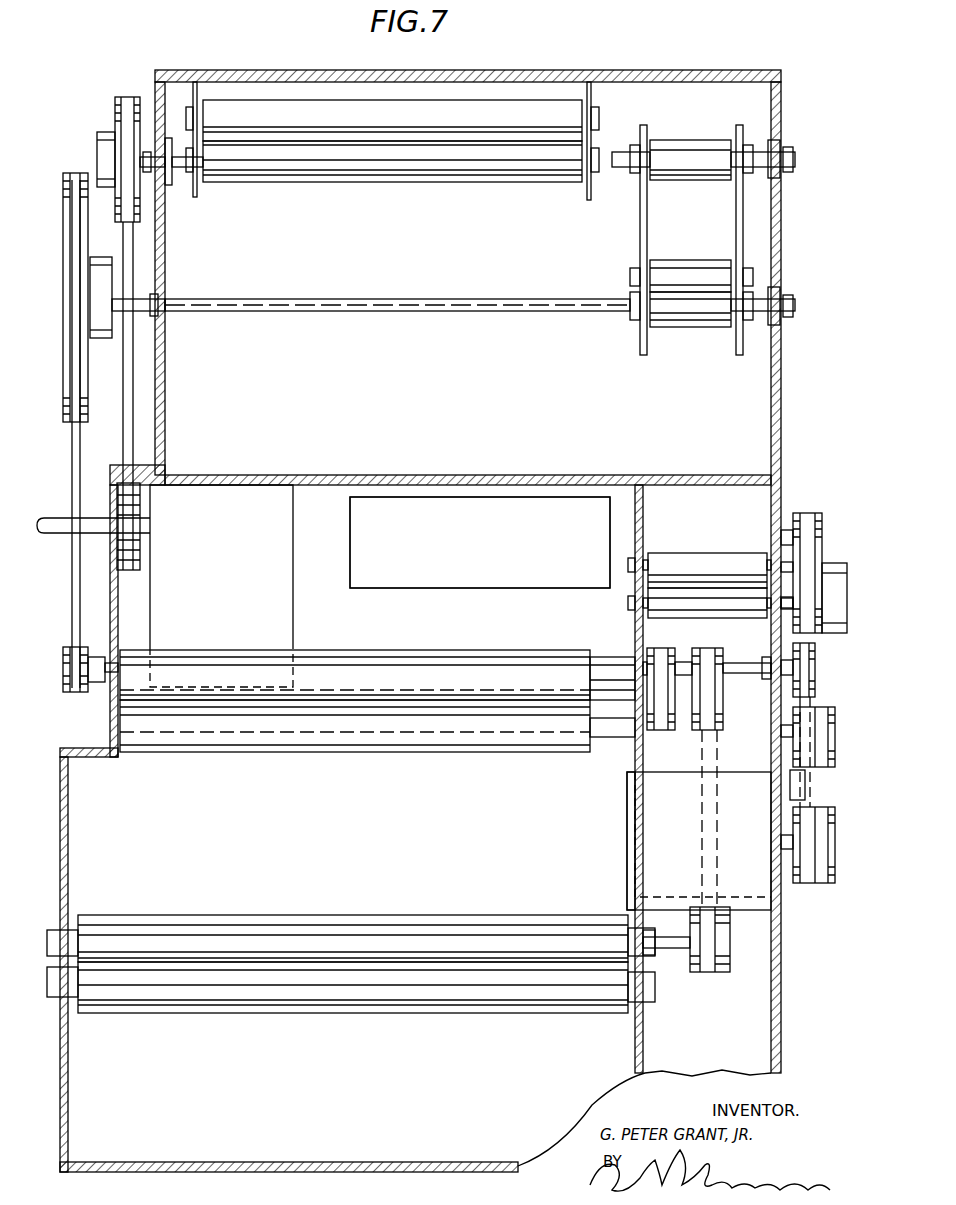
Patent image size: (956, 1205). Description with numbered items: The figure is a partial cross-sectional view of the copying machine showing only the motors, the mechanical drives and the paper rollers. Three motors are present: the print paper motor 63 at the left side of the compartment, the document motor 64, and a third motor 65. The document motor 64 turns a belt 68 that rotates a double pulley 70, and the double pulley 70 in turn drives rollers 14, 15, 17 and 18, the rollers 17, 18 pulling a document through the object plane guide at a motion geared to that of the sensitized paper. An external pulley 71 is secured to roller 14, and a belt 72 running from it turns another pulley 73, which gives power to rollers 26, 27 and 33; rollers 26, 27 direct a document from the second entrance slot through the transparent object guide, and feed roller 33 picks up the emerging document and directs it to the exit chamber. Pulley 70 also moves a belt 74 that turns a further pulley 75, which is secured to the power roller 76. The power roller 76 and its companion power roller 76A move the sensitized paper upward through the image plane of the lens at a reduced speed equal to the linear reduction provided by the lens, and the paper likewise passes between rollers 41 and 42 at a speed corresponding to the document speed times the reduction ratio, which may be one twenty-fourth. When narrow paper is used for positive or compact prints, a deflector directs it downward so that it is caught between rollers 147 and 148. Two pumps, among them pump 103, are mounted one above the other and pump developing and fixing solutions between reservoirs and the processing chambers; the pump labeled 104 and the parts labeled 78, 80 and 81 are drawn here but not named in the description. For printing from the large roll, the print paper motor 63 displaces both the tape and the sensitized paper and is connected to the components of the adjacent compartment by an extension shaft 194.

The roller 14 is at (408, 680).
The roller 15 is at (335, 748).
The roller 17 is at (410, 745).
The roller 18 is at (548, 665).
The roller 26 is at (345, 1010).
The roller 27 is at (385, 940).
The feed roller 33 is at (266, 930).
The roller 41 is at (287, 180).
The roller 42 is at (310, 105).
The print paper motor 63 is at (288, 599).
The document motor 64 is at (625, 762).
The motor 65 is at (625, 830).
The belt 68 is at (815, 700).
The double pulley 70 is at (62, 672).
The external pulley 71 is at (715, 668).
The belt 72 is at (712, 746).
The pulley 73 is at (718, 975).
The belt 74 is at (70, 462).
The pulley 75 is at (57, 205).
The power roller 76 is at (672, 325).
The power roller 76A is at (695, 272).
The bearing block 78 is at (118, 572).
The shaft 80 is at (127, 413).
The pulley 81 is at (113, 118).
The pump 103 is at (404, 500).
The pump 104 is at (480, 542).
The roller 147 is at (711, 538).
The roller 148 is at (660, 605).
The extension shaft 194 is at (58, 535).